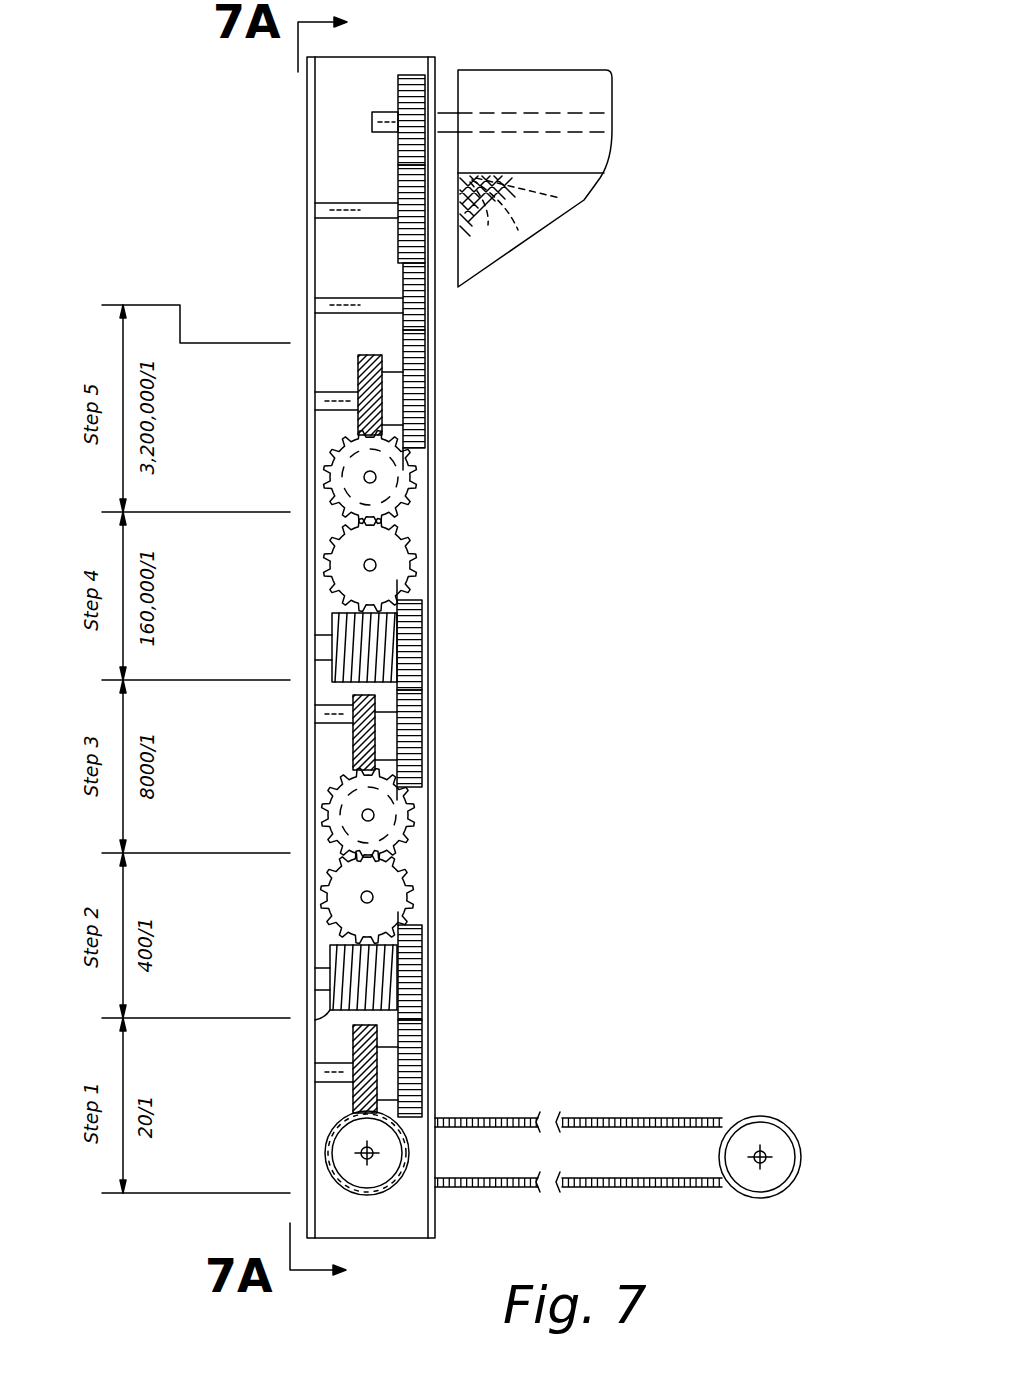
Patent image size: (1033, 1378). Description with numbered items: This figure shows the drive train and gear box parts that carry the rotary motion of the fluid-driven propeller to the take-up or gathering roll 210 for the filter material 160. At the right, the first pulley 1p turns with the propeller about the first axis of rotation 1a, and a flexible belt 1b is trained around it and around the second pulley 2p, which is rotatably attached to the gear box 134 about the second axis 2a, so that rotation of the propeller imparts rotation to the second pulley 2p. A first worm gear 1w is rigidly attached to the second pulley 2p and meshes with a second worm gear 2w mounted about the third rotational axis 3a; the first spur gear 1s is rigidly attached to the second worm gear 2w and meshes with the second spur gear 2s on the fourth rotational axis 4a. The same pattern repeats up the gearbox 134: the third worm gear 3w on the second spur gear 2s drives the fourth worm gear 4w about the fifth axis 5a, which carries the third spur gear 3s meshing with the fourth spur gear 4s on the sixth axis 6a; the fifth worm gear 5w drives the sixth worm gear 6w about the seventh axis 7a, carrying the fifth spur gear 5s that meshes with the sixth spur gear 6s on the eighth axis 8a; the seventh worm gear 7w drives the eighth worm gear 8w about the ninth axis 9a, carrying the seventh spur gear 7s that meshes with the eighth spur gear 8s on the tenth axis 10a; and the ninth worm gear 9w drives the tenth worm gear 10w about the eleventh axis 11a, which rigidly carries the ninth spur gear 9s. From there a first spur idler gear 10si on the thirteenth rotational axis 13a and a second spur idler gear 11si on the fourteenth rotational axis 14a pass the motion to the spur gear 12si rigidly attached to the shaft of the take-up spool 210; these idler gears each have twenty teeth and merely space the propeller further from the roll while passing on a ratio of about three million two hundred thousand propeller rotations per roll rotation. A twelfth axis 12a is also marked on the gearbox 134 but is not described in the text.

The gear box 134 is at (307, 262).
The gathering roll 210 is at (580, 73).
The filter material 160 is at (569, 198).
The spur gear 12si is at (417, 78).
The second spur idler gear 11si is at (398, 192).
The first spur idler gear 10si is at (425, 325).
The ninth spur gear 9s is at (425, 386).
The eighth spur gear 8s is at (418, 490).
The seventh spur gear 7s is at (405, 556).
The sixth spur gear 6s is at (425, 628).
The fifth spur gear 5s is at (420, 712).
The fourth spur gear 4s is at (418, 815).
The third spur gear 3s is at (400, 872).
The second spur gear 2s is at (420, 952).
The first spur gear 1s is at (418, 1097).
The fourteenth rotational axis 14a is at (372, 117).
The thirteenth rotational axis 13a is at (315, 212).
The twelfth rotational axis 12a is at (315, 303).
The eleventh rotational axis 11a is at (315, 400).
The tenth rotational axis 10a is at (376, 477).
The ninth rotational axis 9a is at (364, 565).
The eighth rotational axis 8a is at (320, 628).
The seventh rotational axis 7a is at (315, 738).
The sixth rotational axis 6a is at (374, 810).
The fifth rotational axis 5a is at (373, 897).
The fourth rotational axis 4a is at (325, 982).
The third rotational axis 3a is at (315, 1070).
The second axis of rotation 2a is at (362, 1158).
The first axis of rotation 1a is at (762, 1150).
The tenth worm gear 10w is at (360, 372).
The ninth worm gear 9w is at (325, 487).
The eighth worm gear 8w is at (340, 546).
The seventh worm gear 7w is at (330, 668).
The sixth worm gear 6w is at (322, 706).
The fifth worm gear 5w is at (328, 830).
The fourth worm gear 4w is at (320, 915).
The third worm gear 3w is at (335, 1012).
The second worm gear 2w is at (355, 1090).
The first worm gear 1w is at (325, 1153).
The belt 1b is at (510, 1118).
The first pulley 1p is at (792, 1147).
The second pulley 2p is at (385, 1183).